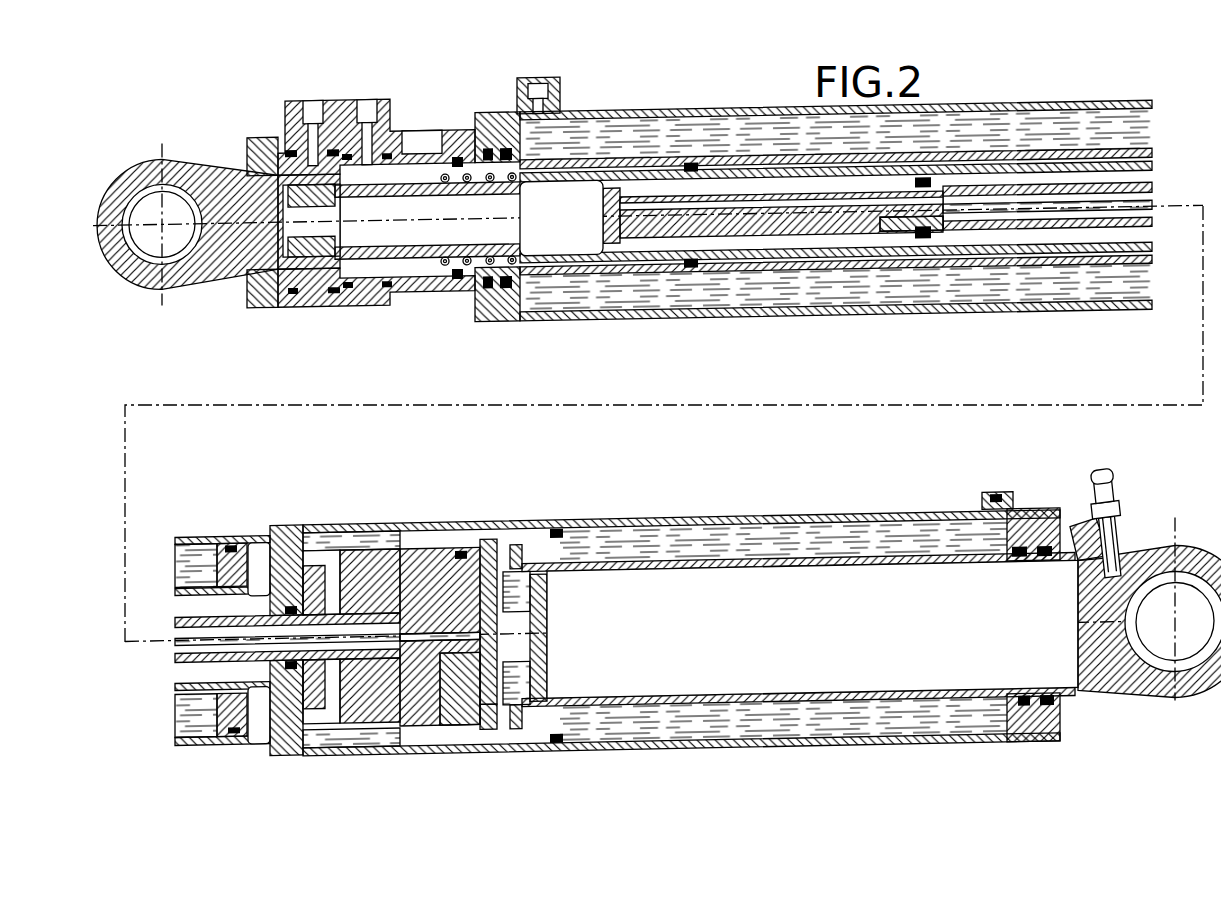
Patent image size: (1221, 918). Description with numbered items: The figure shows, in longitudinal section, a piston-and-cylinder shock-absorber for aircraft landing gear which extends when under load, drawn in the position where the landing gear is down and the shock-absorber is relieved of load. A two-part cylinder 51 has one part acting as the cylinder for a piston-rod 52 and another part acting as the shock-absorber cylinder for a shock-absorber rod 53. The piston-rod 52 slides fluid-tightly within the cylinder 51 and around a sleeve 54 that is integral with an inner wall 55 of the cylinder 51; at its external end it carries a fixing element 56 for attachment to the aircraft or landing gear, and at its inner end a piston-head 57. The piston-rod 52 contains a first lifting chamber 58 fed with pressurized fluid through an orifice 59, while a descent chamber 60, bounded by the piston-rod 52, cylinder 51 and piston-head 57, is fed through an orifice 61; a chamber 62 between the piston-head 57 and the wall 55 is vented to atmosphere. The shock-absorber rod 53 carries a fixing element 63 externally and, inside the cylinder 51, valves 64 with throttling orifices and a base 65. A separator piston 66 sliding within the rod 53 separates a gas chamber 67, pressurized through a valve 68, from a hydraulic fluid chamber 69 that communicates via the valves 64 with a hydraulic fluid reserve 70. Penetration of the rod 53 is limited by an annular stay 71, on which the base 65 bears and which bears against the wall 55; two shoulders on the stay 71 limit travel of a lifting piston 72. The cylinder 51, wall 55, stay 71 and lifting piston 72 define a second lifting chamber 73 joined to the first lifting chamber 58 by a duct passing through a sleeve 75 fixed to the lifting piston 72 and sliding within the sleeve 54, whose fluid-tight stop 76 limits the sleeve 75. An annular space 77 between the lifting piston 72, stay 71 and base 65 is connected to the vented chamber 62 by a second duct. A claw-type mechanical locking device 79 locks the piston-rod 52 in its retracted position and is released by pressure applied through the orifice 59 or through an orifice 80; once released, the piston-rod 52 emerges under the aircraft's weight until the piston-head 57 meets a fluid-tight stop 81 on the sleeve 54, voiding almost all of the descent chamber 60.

The two-part cylinder 51 is at (854, 309).
The piston-rod 52 is at (755, 269).
The shock-absorber rod 53 is at (713, 702).
The sleeve 54 is at (1053, 248).
The inner wall 55 is at (288, 718).
The fixing element 56 is at (231, 255).
The piston-head 57 is at (227, 718).
The first lifting chamber 58 is at (573, 228).
The orifice 59 is at (307, 112).
The descent chamber 60 is at (823, 290).
The orifice 61 is at (545, 89).
The chamber 62 is at (260, 719).
The fixing element 63 is at (1133, 673).
The valves 64 is at (516, 545).
The base 65 is at (496, 702).
The separator piston 66 is at (560, 733).
The gas chamber 67 is at (857, 657).
The valve 68 is at (1137, 497).
The hydraulic fluid chamber 69 is at (496, 600).
The hydraulic fluid reserve 70 is at (782, 713).
The annular stay 71 is at (405, 718).
The lifting piston 72 is at (417, 592).
The second lifting chamber 73 is at (353, 688).
The sleeve 75 is at (892, 224).
The fluid-tight stop 76 is at (924, 236).
The annular space 77 is at (472, 684).
The mechanical locking device 79 is at (413, 282).
The orifice 80 is at (363, 110).
The fluid-tight stop 81 is at (693, 166).